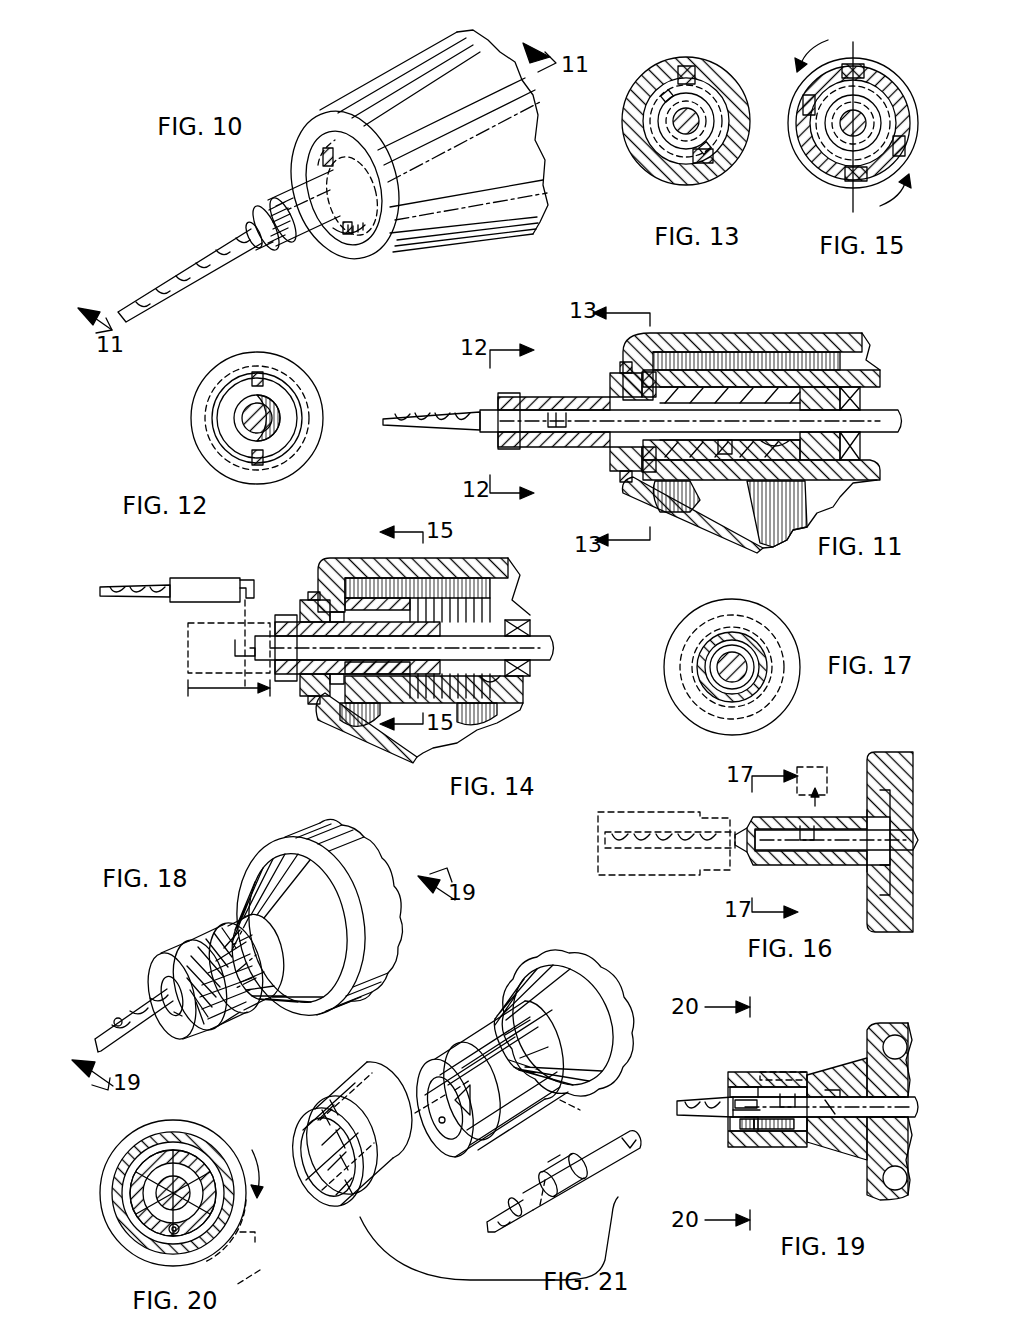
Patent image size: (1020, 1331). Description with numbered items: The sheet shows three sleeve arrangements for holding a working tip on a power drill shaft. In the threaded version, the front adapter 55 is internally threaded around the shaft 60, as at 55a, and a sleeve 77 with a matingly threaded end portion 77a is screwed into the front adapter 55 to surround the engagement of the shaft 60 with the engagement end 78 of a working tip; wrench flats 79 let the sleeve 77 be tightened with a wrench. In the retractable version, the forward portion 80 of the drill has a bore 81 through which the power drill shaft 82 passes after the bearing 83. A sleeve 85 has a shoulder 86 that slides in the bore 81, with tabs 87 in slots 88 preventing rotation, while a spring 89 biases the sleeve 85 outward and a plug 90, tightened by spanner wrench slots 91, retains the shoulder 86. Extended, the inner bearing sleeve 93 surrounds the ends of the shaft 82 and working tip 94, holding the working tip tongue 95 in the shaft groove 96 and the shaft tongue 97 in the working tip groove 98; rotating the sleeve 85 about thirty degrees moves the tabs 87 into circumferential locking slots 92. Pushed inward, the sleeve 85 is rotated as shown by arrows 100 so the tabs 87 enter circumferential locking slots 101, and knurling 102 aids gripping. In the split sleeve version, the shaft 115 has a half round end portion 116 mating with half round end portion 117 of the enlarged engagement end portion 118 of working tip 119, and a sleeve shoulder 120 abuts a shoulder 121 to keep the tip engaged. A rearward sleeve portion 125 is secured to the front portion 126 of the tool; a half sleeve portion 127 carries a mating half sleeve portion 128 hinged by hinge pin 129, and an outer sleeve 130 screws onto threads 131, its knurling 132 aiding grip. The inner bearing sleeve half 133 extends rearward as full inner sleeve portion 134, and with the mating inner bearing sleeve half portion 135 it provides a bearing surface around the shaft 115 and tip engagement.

In FIG. 16, the front adapter 55 is at (895, 752).
In FIG. 16, the internal threads 55a is at (875, 875).
In FIG. 16, the shaft 60 is at (840, 826).
In FIG. 17, the sleeve 77 is at (760, 684).
In FIG. 16, the sleeve 77 is at (812, 866).
In FIG. 16, the matingly threaded end portion 77a is at (722, 812).
In FIG. 17, the engagement end 78 is at (738, 662).
In FIG. 16, the engagement end 78 is at (780, 830).
In FIG. 17, the wrench flats 79 is at (758, 660).
In FIG. 10, the forward portion 80 is at (390, 78).
In FIG. 11, the forward portion 80 is at (780, 352).
In FIG. 14, the forward portion 80 is at (380, 558).
In FIG. 11, the bore 81 is at (805, 387).
In FIG. 13, the power drill shaft 82 is at (676, 126).
In FIG. 15, the power drill shaft 82 is at (842, 132).
In FIG. 11, the power drill shaft 82 is at (890, 410).
In FIG. 14, the power drill shaft 82 is at (555, 640).
In FIG. 11, the bearing 83 is at (858, 392).
In FIG. 14, the bearing 83 is at (528, 624).
In FIG. 10, the sleeve 85 is at (310, 240).
In FIG. 12, the sleeve 85 is at (290, 438).
In FIG. 11, the sleeve 85 is at (566, 397).
In FIG. 14, the sleeve 85 is at (300, 615).
In FIG. 13, the shoulder 86 is at (656, 112).
In FIG. 15, the shoulder 86 is at (828, 122).
In FIG. 11, the shoulder 86 is at (690, 372).
In FIG. 13, the tabs 87 is at (694, 66).
In FIG. 15, the tabs 87 is at (812, 100).
In FIG. 11, the tabs 87 is at (652, 372).
In FIG. 14, the tabs 87 is at (400, 604).
In FIG. 15, the slots 88 is at (866, 70).
In FIG. 11, the slots 88 is at (712, 388).
In FIG. 14, the slots 88 is at (380, 598).
In FIG. 11, the spring 89 is at (775, 458).
In FIG. 14, the spring 89 is at (490, 703).
In FIG. 10, the plug 90 is at (362, 228).
In FIG. 12, the plug 90 is at (290, 394).
In FIG. 11, the plug 90 is at (625, 374).
In FIG. 14, the plug 90 is at (305, 690).
In FIG. 10, the spanner wrench slots 91 is at (323, 150).
In FIG. 12, the spanner wrench slots 91 is at (257, 372).
In FIG. 11, the spanner wrench slots 91 is at (620, 367).
In FIG. 14, the spanner wrench slots 91 is at (312, 700).
In FIG. 13, the circumferential locking slots 92 is at (670, 80).
In FIG. 14, the circumferential locking slots 92 is at (335, 712).
In FIG. 12, the inner bearing sleeve 93 is at (270, 406).
In FIG. 11, the inner bearing sleeve 93 is at (512, 396).
In FIG. 14, the inner bearing sleeve 93 is at (278, 622).
In FIG. 10, the working tip 94 is at (242, 233).
In FIG. 12, the working tip 94 is at (250, 418).
In FIG. 11, the working tip 94 is at (495, 428).
In FIG. 14, the working tip 94 is at (182, 580).
In FIG. 14, the working tip tongue 95 is at (250, 580).
In FIG. 14, the shaft groove 96 is at (245, 682).
In FIG. 14, the shaft tongue 97 is at (234, 652).
In FIG. 14, the working tip groove 98 is at (222, 578).
In FIG. 15, the arrows 100 is at (828, 40).
In FIG. 15, the circumferential locking slots 101 is at (860, 64).
In FIG. 11, the circumferential locking slots 101 is at (728, 456).
In FIG. 10, the knurling 102 is at (268, 213).
In FIG. 21, the shaft 115 is at (527, 1020).
In FIG. 19, the shaft 115 is at (905, 1108).
In FIG. 21, the half round end portion 116 is at (488, 1062).
In FIG. 19, the half round end portion 116 is at (835, 1140).
In FIG. 21, the half round end portion 117 is at (636, 1145).
In FIG. 19, the half round end portion 117 is at (778, 1097).
In FIG. 21, the enlarged engagement end portion 118 is at (612, 1160).
In FIG. 19, the enlarged engagement end portion 118 is at (735, 1117).
In FIG. 20, the enlarged engagement end portion 118 is at (160, 1200).
In FIG. 18, the working tip 119 is at (140, 1008).
In FIG. 21, the working tip 119 is at (500, 1235).
In FIG. 19, the working tip 119 is at (692, 1115).
In FIG. 21, the shoulder 120 is at (500, 1160).
In FIG. 19, the shoulder 120 is at (735, 1102).
In FIG. 21, the shoulder 121 is at (575, 1185).
In FIG. 19, the shoulder 121 is at (740, 1085).
In FIG. 18, the rearward sleeve portion 125 is at (290, 996).
In FIG. 21, the rearward sleeve portion 125 is at (580, 970).
In FIG. 19, the rearward sleeve portion 125 is at (845, 1065).
In FIG. 20, the rearward sleeve portion 125 is at (186, 1122).
In FIG. 18, the front portion 126 is at (258, 848).
In FIG. 21, the front portion 126 is at (545, 955).
In FIG. 19, the front portion 126 is at (890, 1025).
In FIG. 18, the half sleeve portion 127 is at (165, 985).
In FIG. 21, the half sleeve portion 127 is at (425, 1082).
In FIG. 19, the half sleeve portion 127 is at (732, 1082).
In FIG. 20, the half sleeve portion 127 is at (130, 1175).
In FIG. 18, the mating half sleeve portion 128 is at (200, 1018).
In FIG. 21, the mating half sleeve portion 128 is at (462, 1140).
In FIG. 19, the mating half sleeve portion 128 is at (775, 1147).
In FIG. 20, the mating half sleeve portion 128 is at (240, 1265).
In FIG. 18, the hinge pin 129 is at (150, 1035).
In FIG. 21, the hinge pin 129 is at (440, 1125).
In FIG. 19, the hinge pin 129 is at (748, 1147).
In FIG. 20, the hinge pin 129 is at (168, 1232).
In FIG. 18, the outer sleeve 130 is at (235, 935).
In FIG. 21, the outer sleeve 130 is at (350, 1095).
In FIG. 19, the outer sleeve 130 is at (745, 1147).
In FIG. 20, the outer sleeve 130 is at (195, 1140).
In FIG. 21, the threads 131 is at (492, 1038).
In FIG. 19, the threads 131 is at (795, 1072).
In FIG. 18, the knurling 132 is at (190, 948).
In FIG. 21, the knurling 132 is at (322, 1118).
In FIG. 21, the inner bearing sleeve half 133 is at (465, 1055).
In FIG. 19, the inner bearing sleeve half 133 is at (752, 1087).
In FIG. 20, the inner bearing sleeve half 133 is at (150, 1168).
In FIG. 21, the full inner sleeve portion 134 is at (548, 1056).
In FIG. 19, the full inner sleeve portion 134 is at (830, 1090).
In FIG. 21, the mating inner bearing sleeve half portion 135 is at (570, 1100).
In FIG. 20, the mating inner bearing sleeve half portion 135 is at (196, 1160).